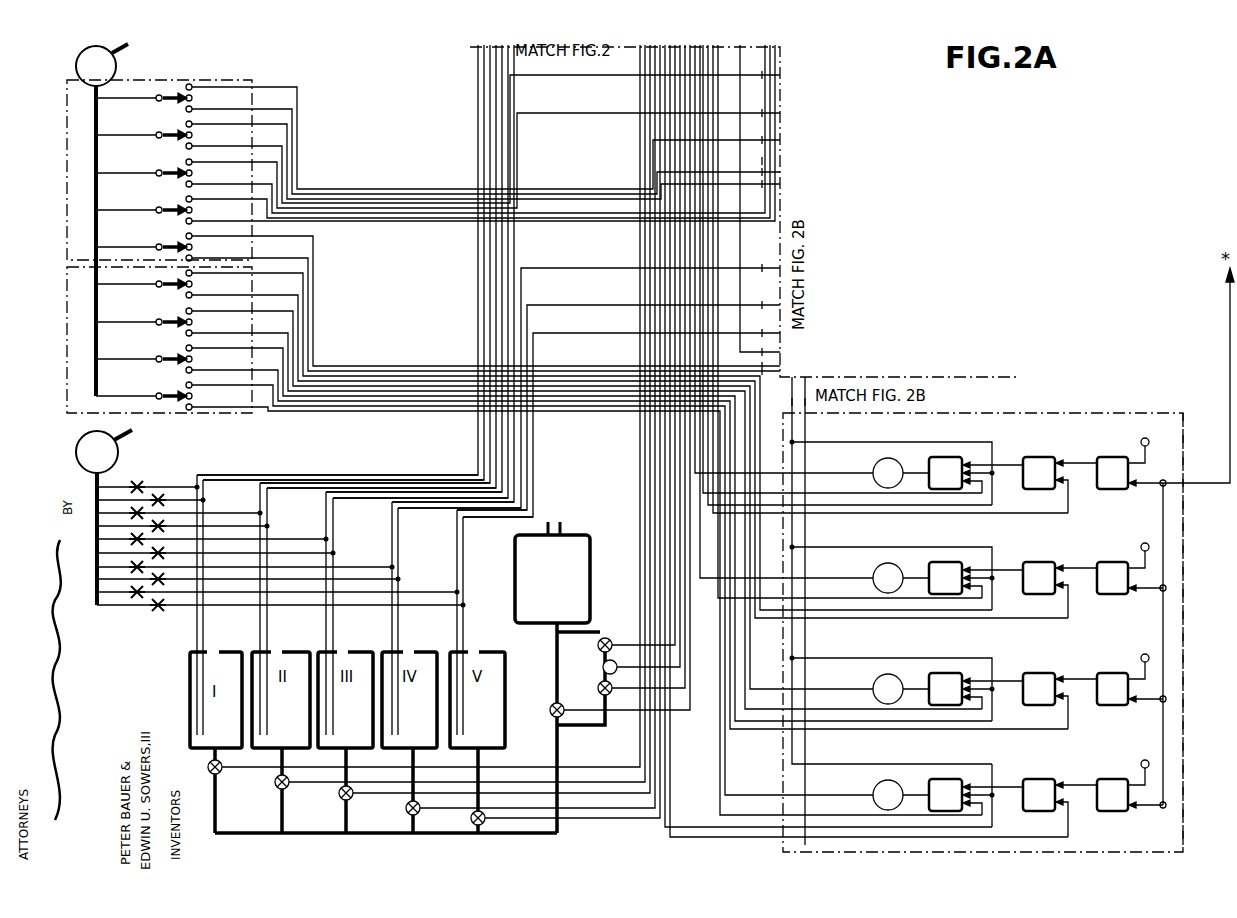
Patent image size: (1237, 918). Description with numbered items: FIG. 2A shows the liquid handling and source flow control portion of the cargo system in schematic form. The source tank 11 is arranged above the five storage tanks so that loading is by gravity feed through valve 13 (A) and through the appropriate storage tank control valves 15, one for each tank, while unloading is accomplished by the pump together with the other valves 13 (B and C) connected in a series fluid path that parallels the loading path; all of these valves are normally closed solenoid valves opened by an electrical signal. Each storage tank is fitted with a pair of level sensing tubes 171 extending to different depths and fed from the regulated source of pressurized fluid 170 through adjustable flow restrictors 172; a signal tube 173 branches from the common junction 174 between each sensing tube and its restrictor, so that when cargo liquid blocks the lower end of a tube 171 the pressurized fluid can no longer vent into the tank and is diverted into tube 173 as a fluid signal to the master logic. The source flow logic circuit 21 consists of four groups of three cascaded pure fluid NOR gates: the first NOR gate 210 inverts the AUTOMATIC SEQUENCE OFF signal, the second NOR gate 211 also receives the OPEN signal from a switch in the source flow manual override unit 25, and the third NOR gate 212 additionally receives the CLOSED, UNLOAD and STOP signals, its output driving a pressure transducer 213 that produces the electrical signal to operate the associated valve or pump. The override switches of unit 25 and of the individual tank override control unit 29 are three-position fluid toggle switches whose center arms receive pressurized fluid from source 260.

The source of pressurized fluid 260 is at (76, 66).
The individual tank override control unit 29 is at (67, 118).
The source flow manual override unit 25 is at (67, 296).
The regulated source of pressurized fluid 170 is at (76, 446).
The adjustable flow restrictor 172 is at (136, 480).
The fluid conducting tube 171 is at (158, 494).
The common junction 174 is at (210, 478).
The fluid conducting tube 173 is at (324, 482).
The source tank 11 is at (565, 524).
The valve 13 is at (610, 696).
The storage tank control valve 15 is at (472, 826).
The source flow logic circuit 21 is at (1183, 630).
The NOR gate 210 is at (1108, 778).
The NOR gate 211 is at (1036, 778).
The NOR gate 212 is at (940, 778).
The pressure transducer 213 is at (874, 788).